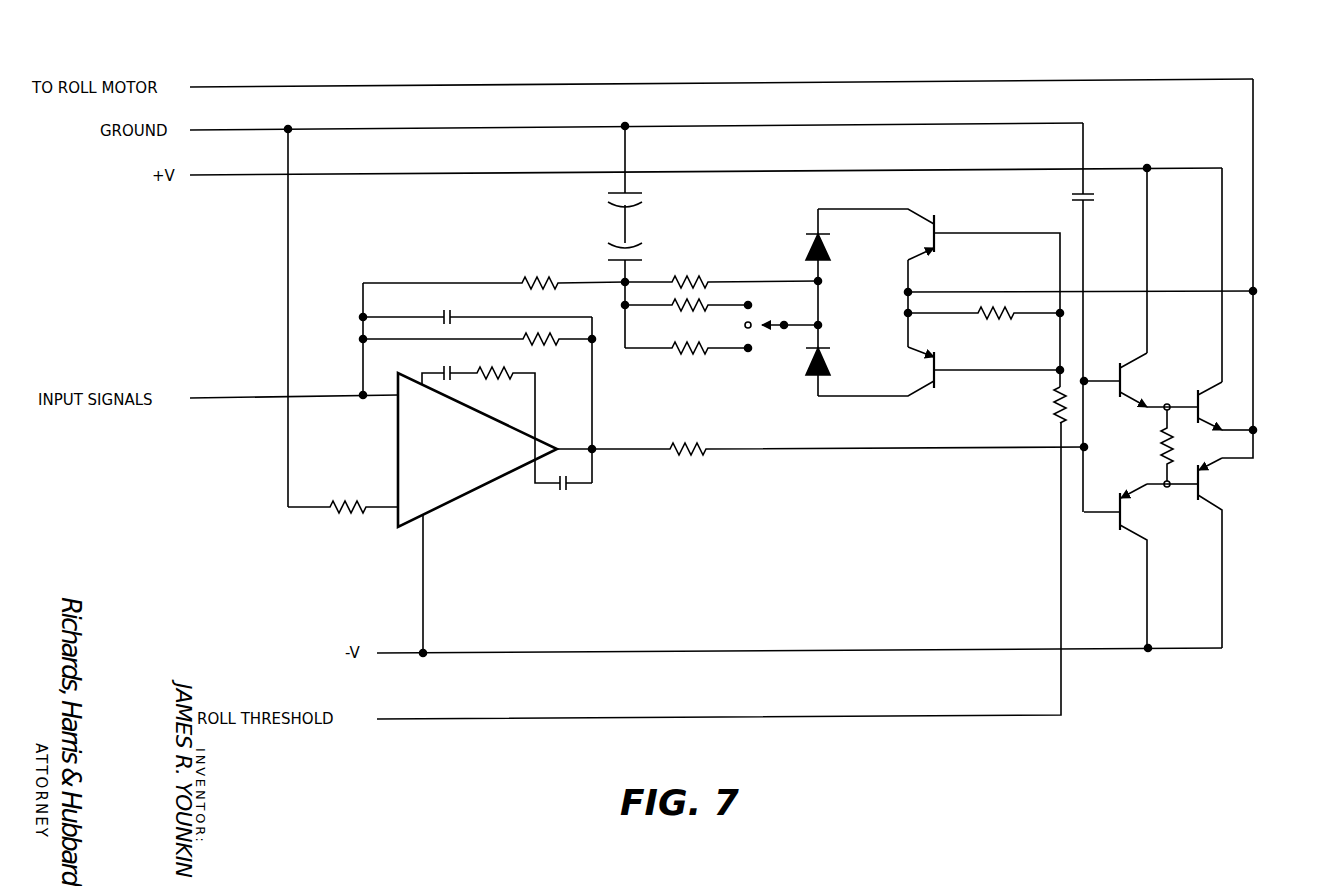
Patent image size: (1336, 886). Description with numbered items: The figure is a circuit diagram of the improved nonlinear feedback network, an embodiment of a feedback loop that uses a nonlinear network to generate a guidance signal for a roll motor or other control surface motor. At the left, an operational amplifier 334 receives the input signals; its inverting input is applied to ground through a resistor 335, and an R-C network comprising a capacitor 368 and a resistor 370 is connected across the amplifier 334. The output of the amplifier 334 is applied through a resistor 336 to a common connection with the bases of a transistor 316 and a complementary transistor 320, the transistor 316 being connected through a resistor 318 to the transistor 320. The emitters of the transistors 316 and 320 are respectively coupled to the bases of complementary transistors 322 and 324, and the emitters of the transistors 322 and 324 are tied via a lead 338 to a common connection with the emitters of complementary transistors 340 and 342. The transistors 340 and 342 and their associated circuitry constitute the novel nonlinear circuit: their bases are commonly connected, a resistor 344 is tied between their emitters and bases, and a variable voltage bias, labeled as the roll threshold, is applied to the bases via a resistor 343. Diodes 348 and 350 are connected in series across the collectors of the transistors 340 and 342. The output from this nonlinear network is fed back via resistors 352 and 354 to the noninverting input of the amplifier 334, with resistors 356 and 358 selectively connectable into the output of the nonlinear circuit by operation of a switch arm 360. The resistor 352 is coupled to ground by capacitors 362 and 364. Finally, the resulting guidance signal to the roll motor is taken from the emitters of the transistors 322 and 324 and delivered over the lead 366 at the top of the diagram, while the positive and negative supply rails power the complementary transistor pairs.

The transistor 316 is at (1129, 390).
The resistor 318 is at (1160, 441).
The complementary transistor 320 is at (1129, 506).
The complementary transistor 322 is at (1208, 404).
The complementary transistor 324 is at (1208, 480).
The operational amplifier 334 is at (466, 459).
The resistor 335 is at (346, 513).
The resistor 336 is at (694, 446).
The lead 338 is at (1255, 330).
The complementary transistor 340 is at (944, 223).
The complementary transistor 342 is at (939, 380).
The resistor 343 is at (1055, 420).
The resistor 344 is at (996, 320).
The diode 348 is at (832, 246).
The diode 350 is at (832, 373).
The resistor 352 is at (690, 278).
The resistor 354 is at (545, 276).
The resistor 356 is at (690, 312).
The resistor 358 is at (690, 356).
The switch arm 360 is at (769, 324).
The capacitor 362 is at (645, 250).
The capacitor 364 is at (645, 199).
The roll motor line 366 is at (1168, 79).
The capacitor 368 is at (449, 313).
The resistor 370 is at (540, 347).